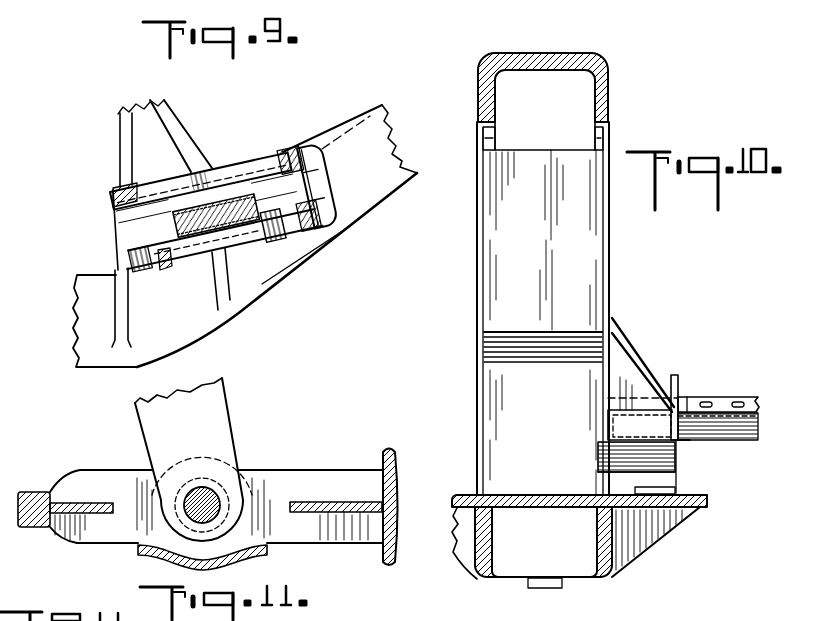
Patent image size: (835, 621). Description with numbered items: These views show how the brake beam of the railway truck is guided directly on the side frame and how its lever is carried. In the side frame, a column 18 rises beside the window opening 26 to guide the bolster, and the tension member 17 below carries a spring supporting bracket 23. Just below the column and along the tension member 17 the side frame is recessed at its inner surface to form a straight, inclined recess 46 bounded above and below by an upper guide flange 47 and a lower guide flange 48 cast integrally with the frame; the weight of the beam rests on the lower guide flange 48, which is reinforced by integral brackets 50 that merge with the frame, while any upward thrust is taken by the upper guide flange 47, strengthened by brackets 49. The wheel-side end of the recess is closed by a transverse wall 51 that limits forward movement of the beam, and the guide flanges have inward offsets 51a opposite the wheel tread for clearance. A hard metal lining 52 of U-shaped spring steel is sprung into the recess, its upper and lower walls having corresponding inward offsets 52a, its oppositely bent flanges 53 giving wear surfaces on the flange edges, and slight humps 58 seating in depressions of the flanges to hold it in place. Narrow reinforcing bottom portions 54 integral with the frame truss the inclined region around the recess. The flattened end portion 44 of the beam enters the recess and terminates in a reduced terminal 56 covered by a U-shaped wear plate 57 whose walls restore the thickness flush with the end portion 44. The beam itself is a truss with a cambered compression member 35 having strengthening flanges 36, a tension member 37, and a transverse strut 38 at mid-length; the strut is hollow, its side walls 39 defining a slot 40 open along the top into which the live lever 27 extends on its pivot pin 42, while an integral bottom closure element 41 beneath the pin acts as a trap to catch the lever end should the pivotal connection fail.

In FIG. 9, the tension member 17 is at (408, 143).
In FIG. 10, the tension member 17 is at (473, 555).
In FIG. 10, the column 18 is at (490, 240).
In FIG. 10, the spring supporting bracket 23 is at (463, 495).
In FIG. 10, the window opening 26 is at (490, 378).
In FIG. 11, the live lever 27 is at (218, 400).
In FIG. 11, the compression member 35 is at (340, 500).
In FIG. 11, the strengthening flange 36 is at (395, 480).
In FIG. 11, the tension member 37 is at (30, 490).
In FIG. 11, the strut 38 is at (114, 447).
In FIG. 11, the side wall 39 is at (278, 474).
In FIG. 11, the slot 40 is at (312, 476).
In FIG. 11, the bottom closure element 41 is at (255, 558).
In FIG. 11, the pivot pin 42 is at (215, 498).
In FIG. 10, the flattened end portion 44 is at (740, 442).
In FIG. 9, the recess 46 is at (140, 240).
In FIG. 10, the recess 46 is at (598, 458).
In FIG. 9, the upper guide flange 47 is at (113, 192).
In FIG. 10, the upper guide flange 47 is at (606, 412).
In FIG. 9, the lower guide flange 48 is at (130, 258).
In FIG. 10, the lower guide flange 48 is at (667, 478).
In FIG. 9, the bracket 49 is at (183, 152).
In FIG. 10, the bracket 49 is at (640, 362).
In FIG. 9, the bracket 50 is at (203, 288).
In FIG. 9, the transverse wall 51 is at (322, 186).
In FIG. 9, the inward offset 51a is at (301, 150).
In FIG. 9, the hard metal lining 52 is at (150, 212).
In FIG. 9, the inward offset 52a is at (318, 201).
In FIG. 9, the flange 53 is at (247, 167).
In FIG. 10, the flange 53 is at (679, 380).
In FIG. 9, the reinforcing bottom portion 54 is at (283, 292).
In FIG. 9, the reduced terminal 56 is at (255, 207).
In FIG. 10, the reduced terminal 56 is at (678, 423).
In FIG. 9, the wear plate 57 is at (172, 205).
In FIG. 10, the wear plate 57 is at (685, 447).
In FIG. 9, the hump 58 is at (150, 194).